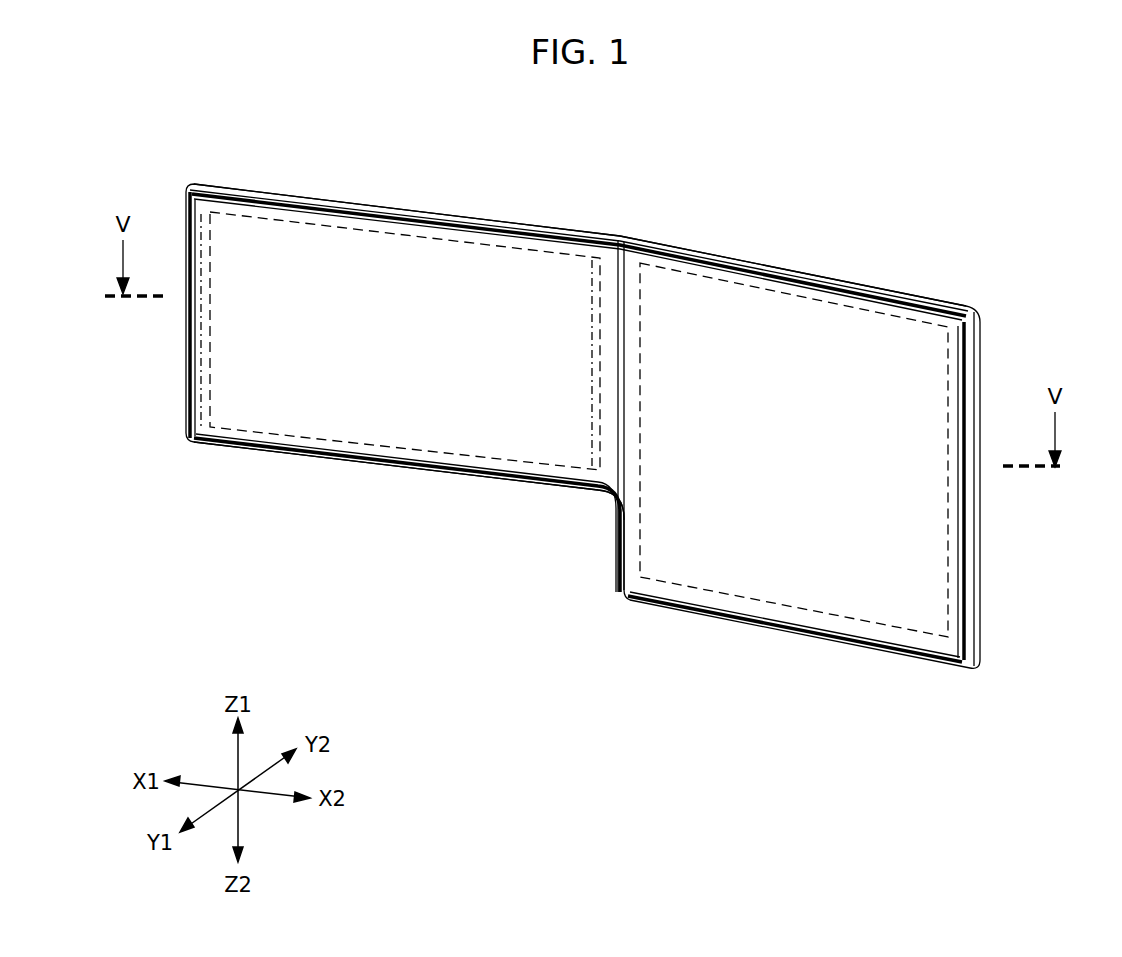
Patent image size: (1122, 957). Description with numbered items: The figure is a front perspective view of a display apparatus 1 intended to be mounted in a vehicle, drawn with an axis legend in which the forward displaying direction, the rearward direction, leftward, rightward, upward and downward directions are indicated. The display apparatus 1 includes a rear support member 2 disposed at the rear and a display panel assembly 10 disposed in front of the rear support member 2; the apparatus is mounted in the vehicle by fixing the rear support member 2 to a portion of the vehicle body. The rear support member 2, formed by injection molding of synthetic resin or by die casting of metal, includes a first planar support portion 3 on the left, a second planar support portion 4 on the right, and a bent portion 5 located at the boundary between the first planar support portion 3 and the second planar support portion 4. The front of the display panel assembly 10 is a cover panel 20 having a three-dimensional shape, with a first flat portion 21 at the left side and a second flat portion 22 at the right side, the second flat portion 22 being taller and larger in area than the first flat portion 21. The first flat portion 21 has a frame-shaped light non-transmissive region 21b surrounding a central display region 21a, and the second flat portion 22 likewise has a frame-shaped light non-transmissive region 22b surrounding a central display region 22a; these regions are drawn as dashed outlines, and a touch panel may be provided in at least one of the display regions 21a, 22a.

The display apparatus 1 is at (621, 419).
The rear support member 2 is at (621, 441).
The first planar support portion 3 is at (403, 208).
The second planar support portion 4 is at (886, 292).
The bent portion 5 is at (626, 240).
The display panel assembly 10 is at (421, 458).
The cover panel 20 is at (551, 497).
The first flat portion 21 is at (583, 396).
The display region 21a is at (285, 265).
The light non-transmissive region 21b is at (320, 445).
The second flat portion 22 is at (794, 477).
The display region 22a is at (786, 336).
The light non-transmissive region 22b is at (737, 600).